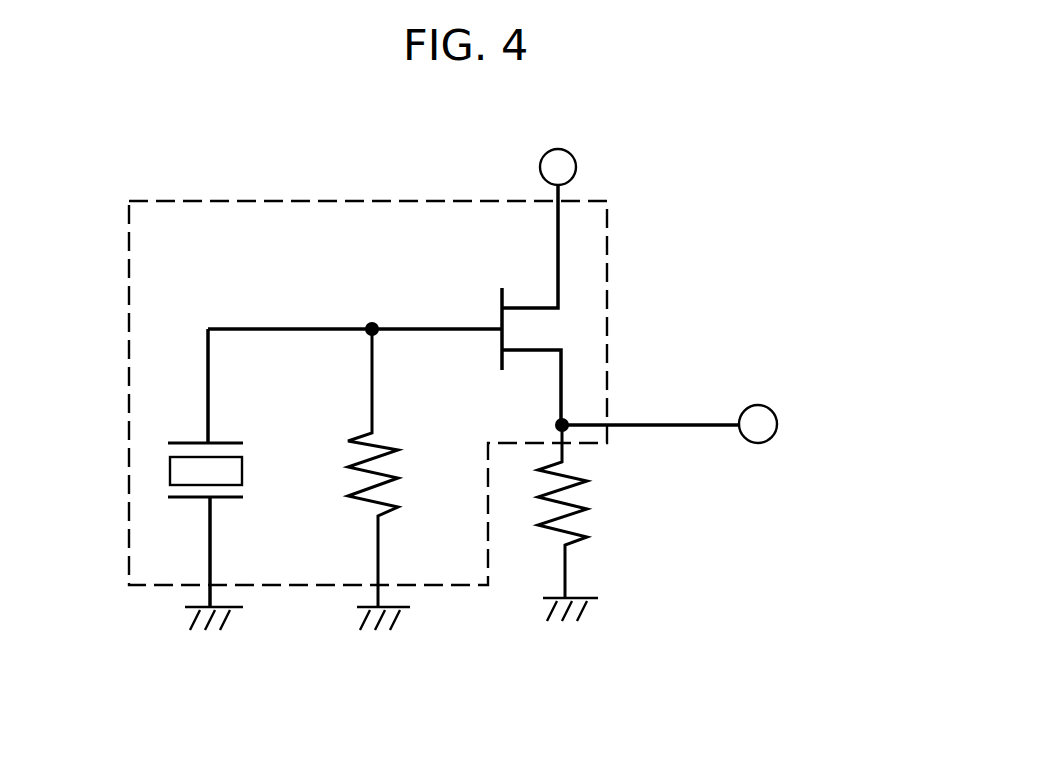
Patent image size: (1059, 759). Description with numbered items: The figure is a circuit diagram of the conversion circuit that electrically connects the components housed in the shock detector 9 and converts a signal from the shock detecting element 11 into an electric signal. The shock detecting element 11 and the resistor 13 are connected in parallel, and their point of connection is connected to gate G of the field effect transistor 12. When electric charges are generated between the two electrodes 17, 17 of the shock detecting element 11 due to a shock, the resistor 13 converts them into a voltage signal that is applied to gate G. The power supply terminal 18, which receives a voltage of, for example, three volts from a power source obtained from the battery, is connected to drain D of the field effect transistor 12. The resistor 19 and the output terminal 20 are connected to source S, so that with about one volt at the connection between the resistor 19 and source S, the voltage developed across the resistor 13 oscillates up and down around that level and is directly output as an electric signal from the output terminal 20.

The shock detector 9 is at (130, 267).
The shock detecting element 11 is at (158, 501).
The field effect transistor 12 is at (568, 325).
The resistor 13 is at (343, 505).
The electrodes 17 is at (218, 443).
The power supply terminal 18 is at (540, 165).
The resistor 19 is at (594, 498).
The output terminal 20 is at (757, 404).